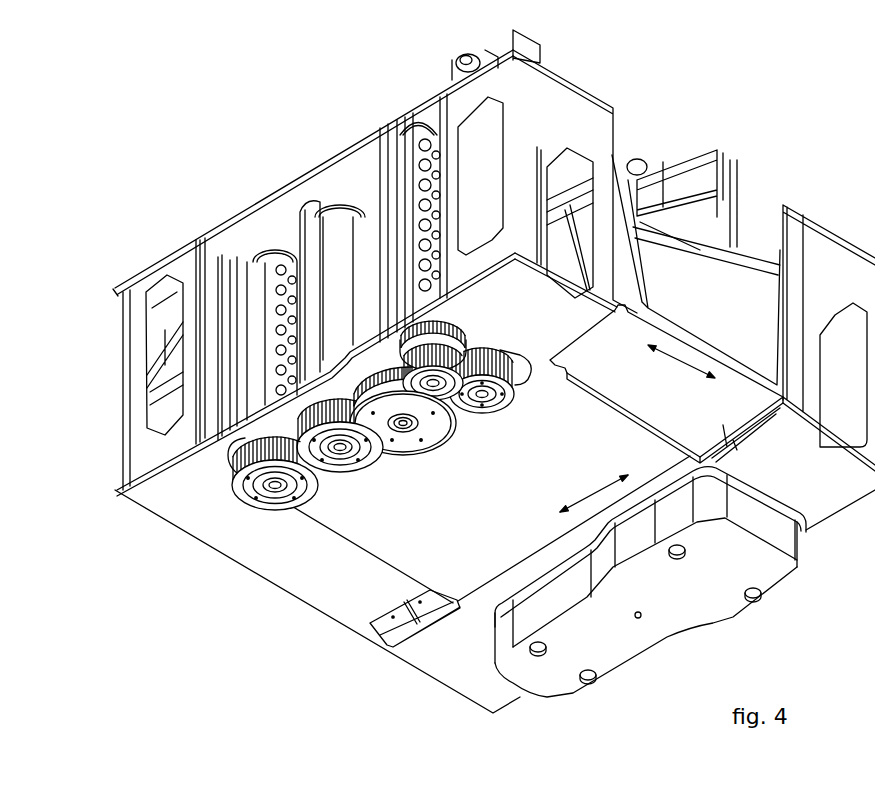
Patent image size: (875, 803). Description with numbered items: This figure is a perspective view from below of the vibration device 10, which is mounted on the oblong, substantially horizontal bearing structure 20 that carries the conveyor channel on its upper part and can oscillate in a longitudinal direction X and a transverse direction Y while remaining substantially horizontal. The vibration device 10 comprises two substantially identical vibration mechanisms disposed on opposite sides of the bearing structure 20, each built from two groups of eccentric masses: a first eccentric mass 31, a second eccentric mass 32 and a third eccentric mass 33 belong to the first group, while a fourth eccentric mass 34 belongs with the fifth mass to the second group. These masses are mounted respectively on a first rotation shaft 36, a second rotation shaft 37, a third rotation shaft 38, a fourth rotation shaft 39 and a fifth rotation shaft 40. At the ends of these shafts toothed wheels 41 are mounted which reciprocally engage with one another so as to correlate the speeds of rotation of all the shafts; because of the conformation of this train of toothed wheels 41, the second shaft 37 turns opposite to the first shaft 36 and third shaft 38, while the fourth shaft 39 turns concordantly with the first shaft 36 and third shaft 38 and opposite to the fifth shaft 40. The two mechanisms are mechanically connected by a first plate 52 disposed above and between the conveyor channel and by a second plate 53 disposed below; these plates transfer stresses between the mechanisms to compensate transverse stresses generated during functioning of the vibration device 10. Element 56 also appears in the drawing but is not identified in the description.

The vibration device 10 is at (108, 124).
The bearing structure 20 is at (762, 266).
The first eccentric mass 31 is at (253, 257).
The second eccentric mass 32 is at (313, 208).
The third eccentric mass 33 is at (393, 177).
The fourth eccentric mass 34 is at (400, 127).
The first rotation shaft 36 is at (277, 490).
The second rotation shaft 37 is at (357, 455).
The third rotation shaft 38 is at (407, 435).
The fourth rotation shaft 39 is at (421, 438).
The fifth rotation shaft 40 is at (498, 400).
The toothed wheels 41 is at (437, 402).
The first plate 52 is at (657, 255).
The second plate 53 is at (617, 441).
The support plate of gear train 56 is at (437, 322).